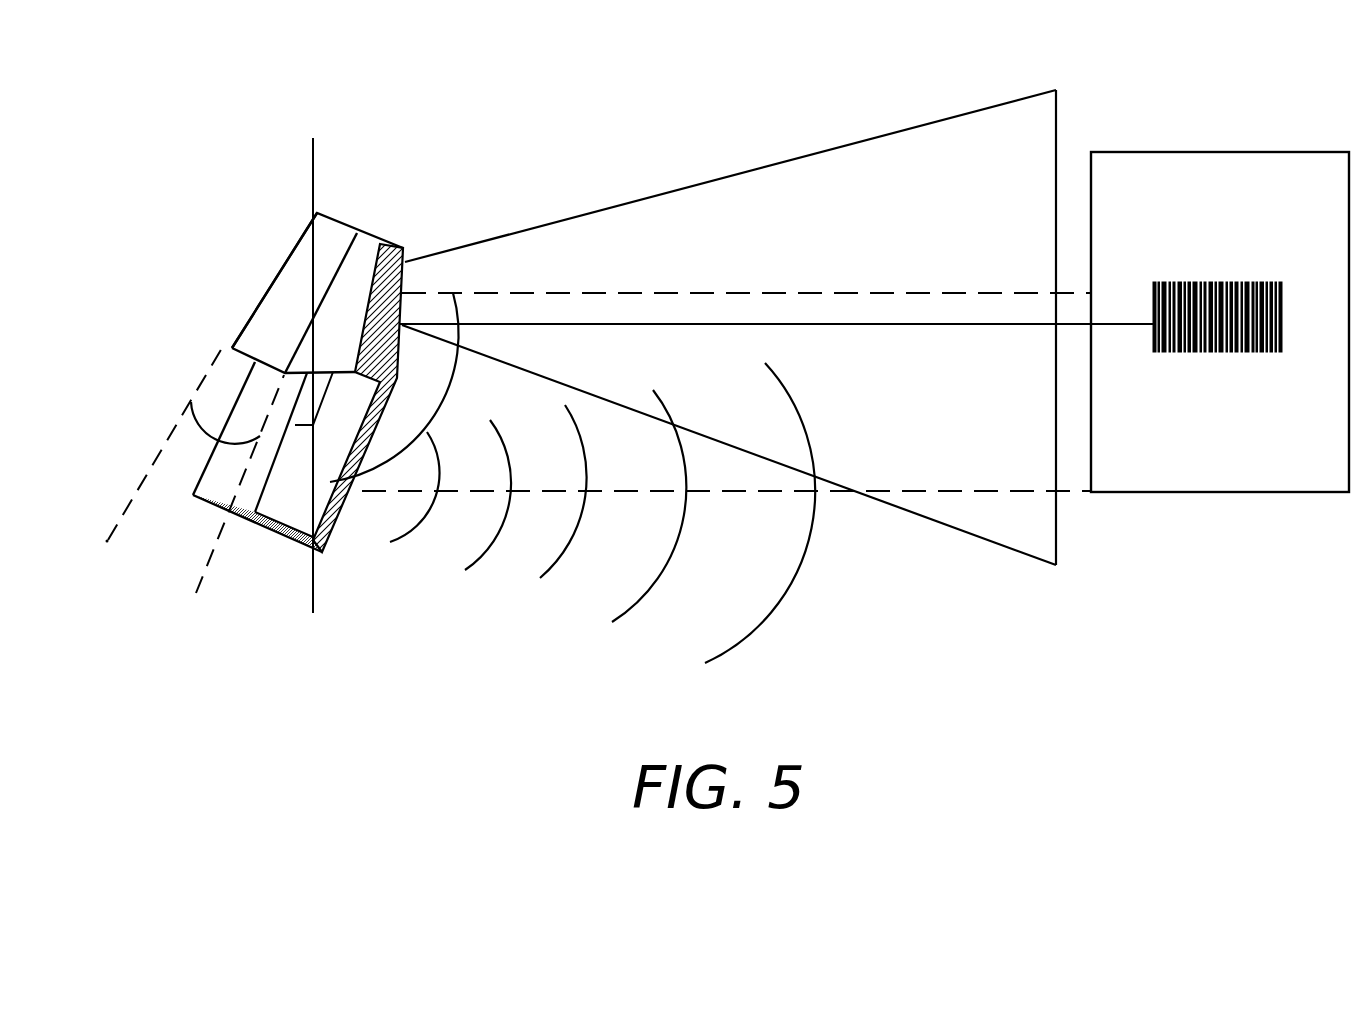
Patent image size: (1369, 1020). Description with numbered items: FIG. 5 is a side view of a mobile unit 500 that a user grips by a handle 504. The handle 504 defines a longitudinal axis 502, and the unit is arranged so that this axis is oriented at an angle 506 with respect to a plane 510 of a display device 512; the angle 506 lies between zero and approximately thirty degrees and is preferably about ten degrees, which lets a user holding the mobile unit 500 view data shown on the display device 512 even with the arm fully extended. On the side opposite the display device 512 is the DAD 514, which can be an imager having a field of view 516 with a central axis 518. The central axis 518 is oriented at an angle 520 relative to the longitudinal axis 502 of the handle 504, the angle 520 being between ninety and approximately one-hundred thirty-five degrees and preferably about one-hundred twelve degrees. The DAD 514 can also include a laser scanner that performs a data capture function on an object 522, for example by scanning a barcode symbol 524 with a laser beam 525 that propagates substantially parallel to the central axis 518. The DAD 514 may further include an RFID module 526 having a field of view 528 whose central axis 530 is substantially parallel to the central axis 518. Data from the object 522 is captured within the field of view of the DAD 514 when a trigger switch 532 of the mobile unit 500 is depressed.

The mobile unit 500 is at (367, 208).
The longitudinal axis 502 is at (218, 533).
The handle 504 is at (238, 387).
The angle 506 is at (205, 430).
The plane 510 is at (162, 452).
The display device 512 is at (277, 268).
The DAD 514 is at (395, 247).
The field of view 516 is at (628, 202).
The central axis 518 is at (680, 292).
The angle 520 is at (453, 370).
The object 522 is at (1227, 150).
The barcode symbol 524 is at (1220, 282).
The laser beam 525 is at (922, 325).
The RFID module 526 is at (333, 532).
The field of view 528 is at (802, 588).
The central axis 530 is at (945, 488).
The trigger switch 532 is at (322, 413).